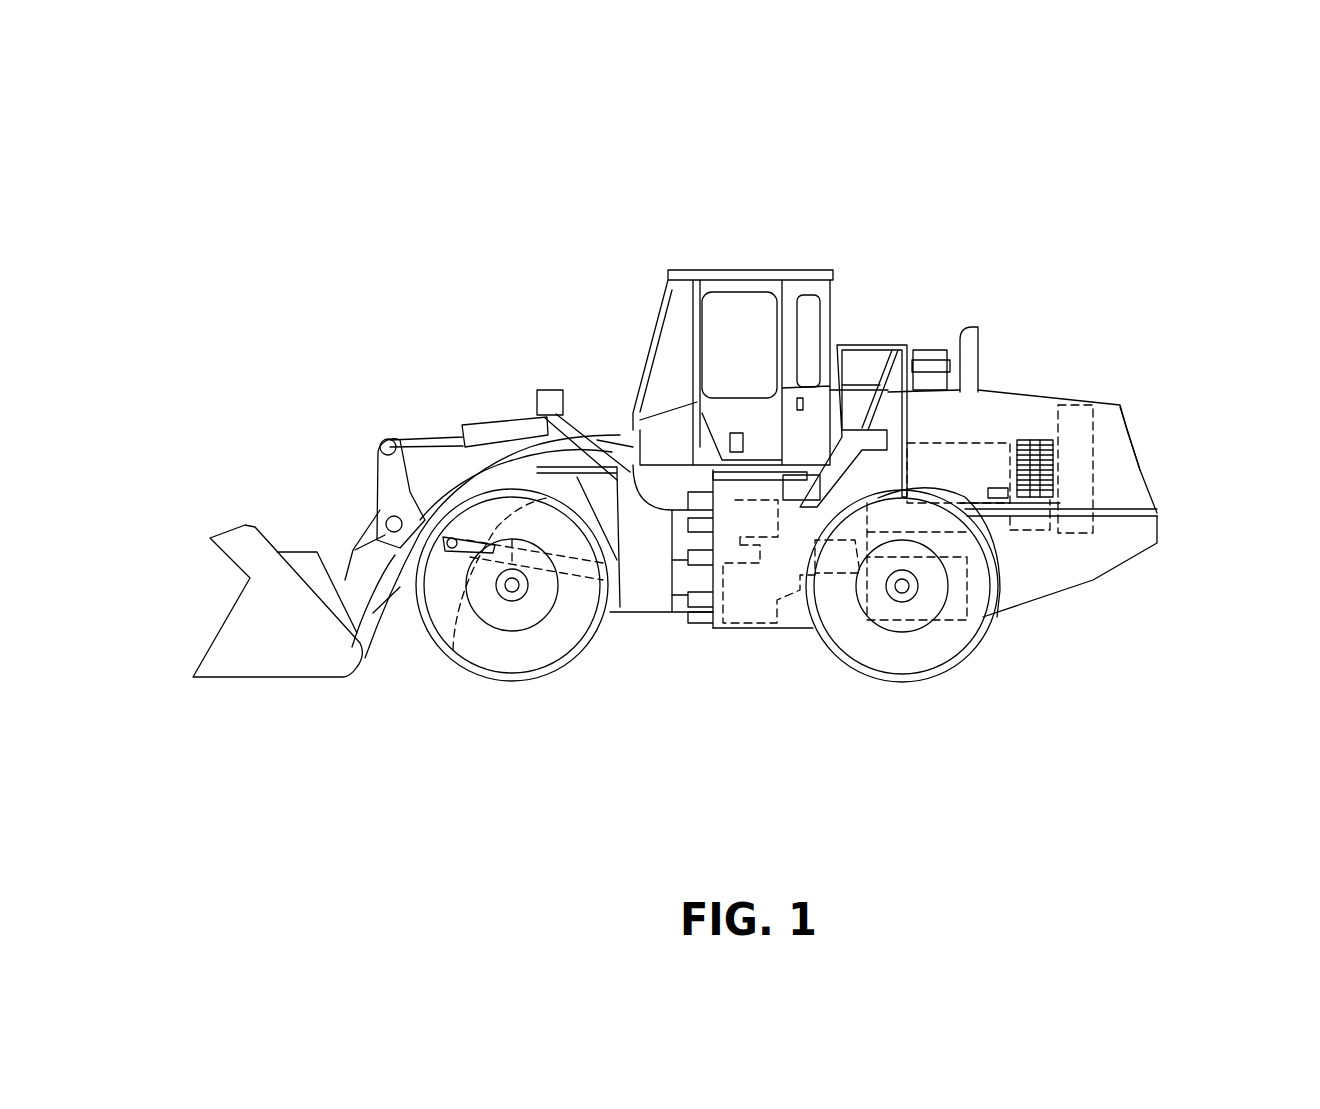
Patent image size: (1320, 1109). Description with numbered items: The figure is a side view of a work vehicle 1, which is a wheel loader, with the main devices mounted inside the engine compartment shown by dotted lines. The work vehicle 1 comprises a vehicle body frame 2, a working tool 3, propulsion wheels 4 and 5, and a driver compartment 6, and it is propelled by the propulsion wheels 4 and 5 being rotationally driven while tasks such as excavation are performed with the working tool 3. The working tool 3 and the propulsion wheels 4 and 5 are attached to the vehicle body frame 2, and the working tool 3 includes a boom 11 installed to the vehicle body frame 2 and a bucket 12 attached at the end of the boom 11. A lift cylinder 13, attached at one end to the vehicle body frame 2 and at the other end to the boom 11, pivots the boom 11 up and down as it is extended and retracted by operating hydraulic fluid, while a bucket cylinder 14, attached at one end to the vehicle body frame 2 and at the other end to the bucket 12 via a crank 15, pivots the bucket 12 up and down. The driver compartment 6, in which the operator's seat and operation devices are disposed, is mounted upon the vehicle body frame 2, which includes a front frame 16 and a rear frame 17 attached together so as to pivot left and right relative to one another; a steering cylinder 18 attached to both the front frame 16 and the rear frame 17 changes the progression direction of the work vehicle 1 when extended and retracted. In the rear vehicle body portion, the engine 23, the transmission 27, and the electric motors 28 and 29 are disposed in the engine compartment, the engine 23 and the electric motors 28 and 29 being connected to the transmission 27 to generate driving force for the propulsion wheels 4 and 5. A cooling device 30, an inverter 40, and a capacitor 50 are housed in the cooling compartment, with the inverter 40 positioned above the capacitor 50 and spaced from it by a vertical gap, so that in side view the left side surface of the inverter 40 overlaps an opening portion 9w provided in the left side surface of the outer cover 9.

The work vehicle 1 is at (960, 187).
The vehicle body frame 2 is at (733, 642).
The working tool 3 is at (262, 500).
The propulsion wheel 4 is at (520, 660).
The propulsion wheel 5 is at (913, 667).
The driver compartment 6 is at (797, 268).
The outer cover 9 is at (1113, 402).
The opening portion 9w is at (1057, 453).
The boom 11 is at (425, 520).
The bucket 12 is at (245, 613).
The lift cylinder 13 is at (453, 652).
The bucket cylinder 14 is at (474, 428).
The crank 15 is at (378, 497).
The front frame 16 is at (630, 600).
The rear frame 17 is at (1140, 565).
The steering cylinder 18 is at (698, 558).
The engine 23 is at (972, 443).
The transmission 27 is at (787, 600).
The electric motor 28 is at (862, 530).
The electric motor 29 is at (753, 500).
The cooling device 30 is at (1130, 463).
The inverter 40 is at (1036, 440).
The capacitor 50 is at (1032, 530).